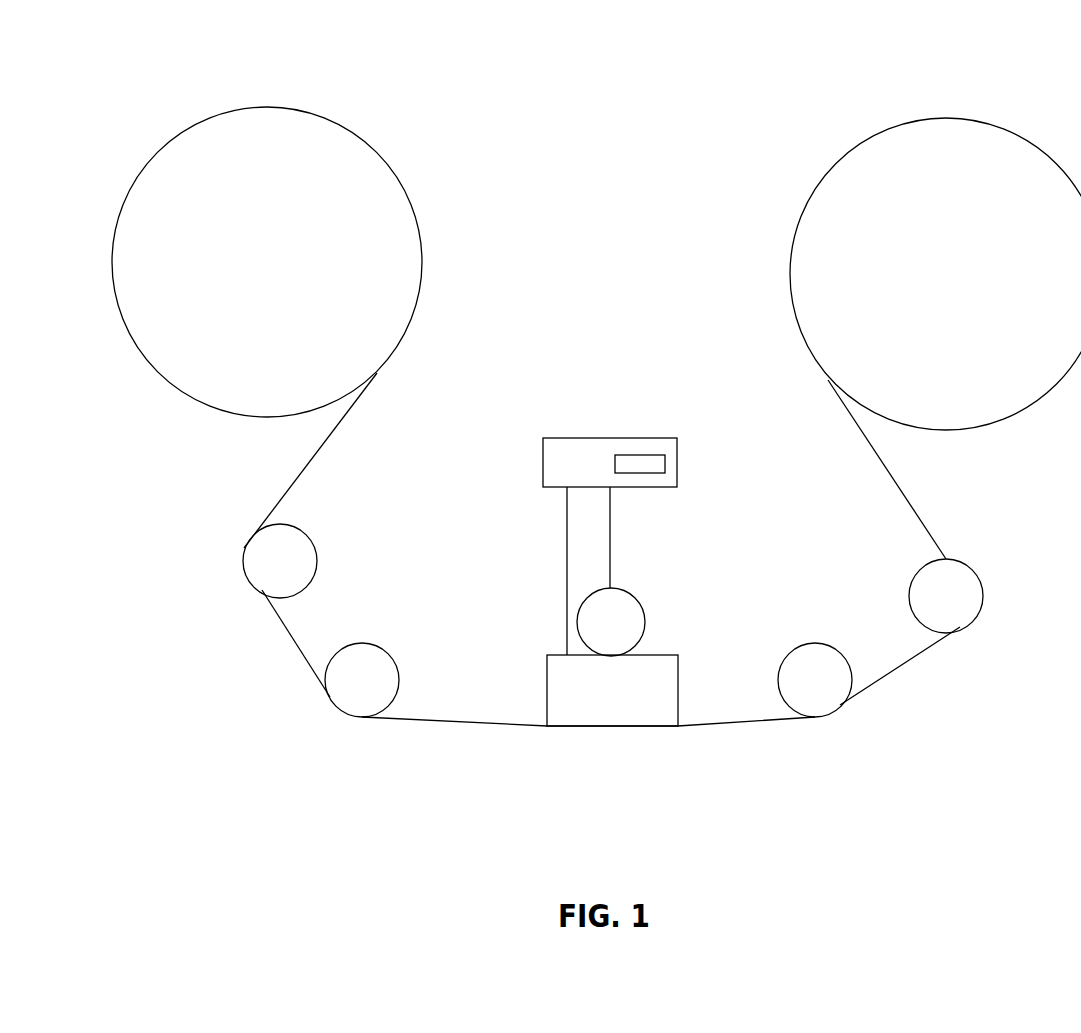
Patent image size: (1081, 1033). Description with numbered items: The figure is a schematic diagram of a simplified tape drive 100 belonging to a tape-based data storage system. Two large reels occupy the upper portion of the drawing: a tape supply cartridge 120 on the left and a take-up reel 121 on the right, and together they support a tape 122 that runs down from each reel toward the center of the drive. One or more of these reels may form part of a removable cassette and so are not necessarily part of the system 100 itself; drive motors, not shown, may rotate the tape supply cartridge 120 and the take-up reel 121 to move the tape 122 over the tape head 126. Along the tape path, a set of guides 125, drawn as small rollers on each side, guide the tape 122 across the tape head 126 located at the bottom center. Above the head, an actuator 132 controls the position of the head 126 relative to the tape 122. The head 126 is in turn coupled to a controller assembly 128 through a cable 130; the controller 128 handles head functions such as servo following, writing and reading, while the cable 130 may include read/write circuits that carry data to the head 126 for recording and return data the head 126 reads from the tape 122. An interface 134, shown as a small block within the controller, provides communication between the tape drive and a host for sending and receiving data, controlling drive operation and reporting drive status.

The tape drive 100 is at (218, 478).
The tape supply cartridge 120 is at (420, 232).
The take-up reel 121 is at (1045, 395).
The tape 122 is at (460, 723).
The guides 125 is at (363, 643).
The tape head 126 is at (678, 692).
The controller assembly 128 is at (612, 438).
The cable 130 is at (567, 618).
The actuator 132 is at (638, 594).
The interface 134 is at (652, 455).